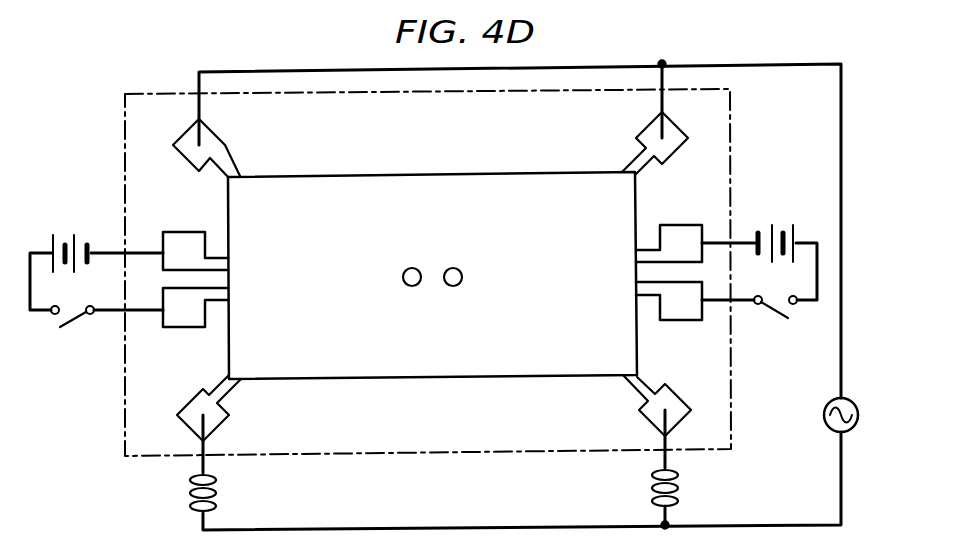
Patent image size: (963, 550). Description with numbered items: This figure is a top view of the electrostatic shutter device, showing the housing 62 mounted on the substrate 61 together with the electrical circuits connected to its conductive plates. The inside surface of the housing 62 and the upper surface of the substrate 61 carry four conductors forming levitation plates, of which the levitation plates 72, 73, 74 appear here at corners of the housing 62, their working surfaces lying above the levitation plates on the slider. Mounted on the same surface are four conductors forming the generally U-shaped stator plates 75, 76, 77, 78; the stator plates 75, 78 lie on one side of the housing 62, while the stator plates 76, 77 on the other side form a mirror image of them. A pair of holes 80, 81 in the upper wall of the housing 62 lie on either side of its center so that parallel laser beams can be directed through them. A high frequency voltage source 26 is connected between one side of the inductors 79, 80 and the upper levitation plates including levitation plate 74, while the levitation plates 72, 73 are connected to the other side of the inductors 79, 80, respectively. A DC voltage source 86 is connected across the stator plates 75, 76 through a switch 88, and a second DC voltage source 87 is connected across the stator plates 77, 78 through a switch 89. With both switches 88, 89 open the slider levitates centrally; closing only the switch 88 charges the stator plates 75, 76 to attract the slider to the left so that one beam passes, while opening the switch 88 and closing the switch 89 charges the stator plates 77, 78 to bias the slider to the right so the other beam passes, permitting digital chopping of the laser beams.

The high frequency voltage source 26 is at (850, 397).
The substrate 61 is at (168, 95).
The housing 62 is at (442, 177).
The levitation plate 72 is at (648, 420).
The levitation plate 73 is at (218, 422).
The levitation plate 74 is at (240, 133).
The stator plate 75 is at (183, 230).
The stator plate 76 is at (182, 322).
The stator plate 77 is at (688, 315).
The stator plate 78 is at (692, 225).
The inductor 79 is at (680, 490).
The inductor / hole 80 is at (192, 487).
The hole 81 is at (464, 272).
The DC voltage source 86 is at (72, 232).
The second DC voltage source 87 is at (782, 225).
The switch 88 is at (73, 330).
The switch 89 is at (772, 312).